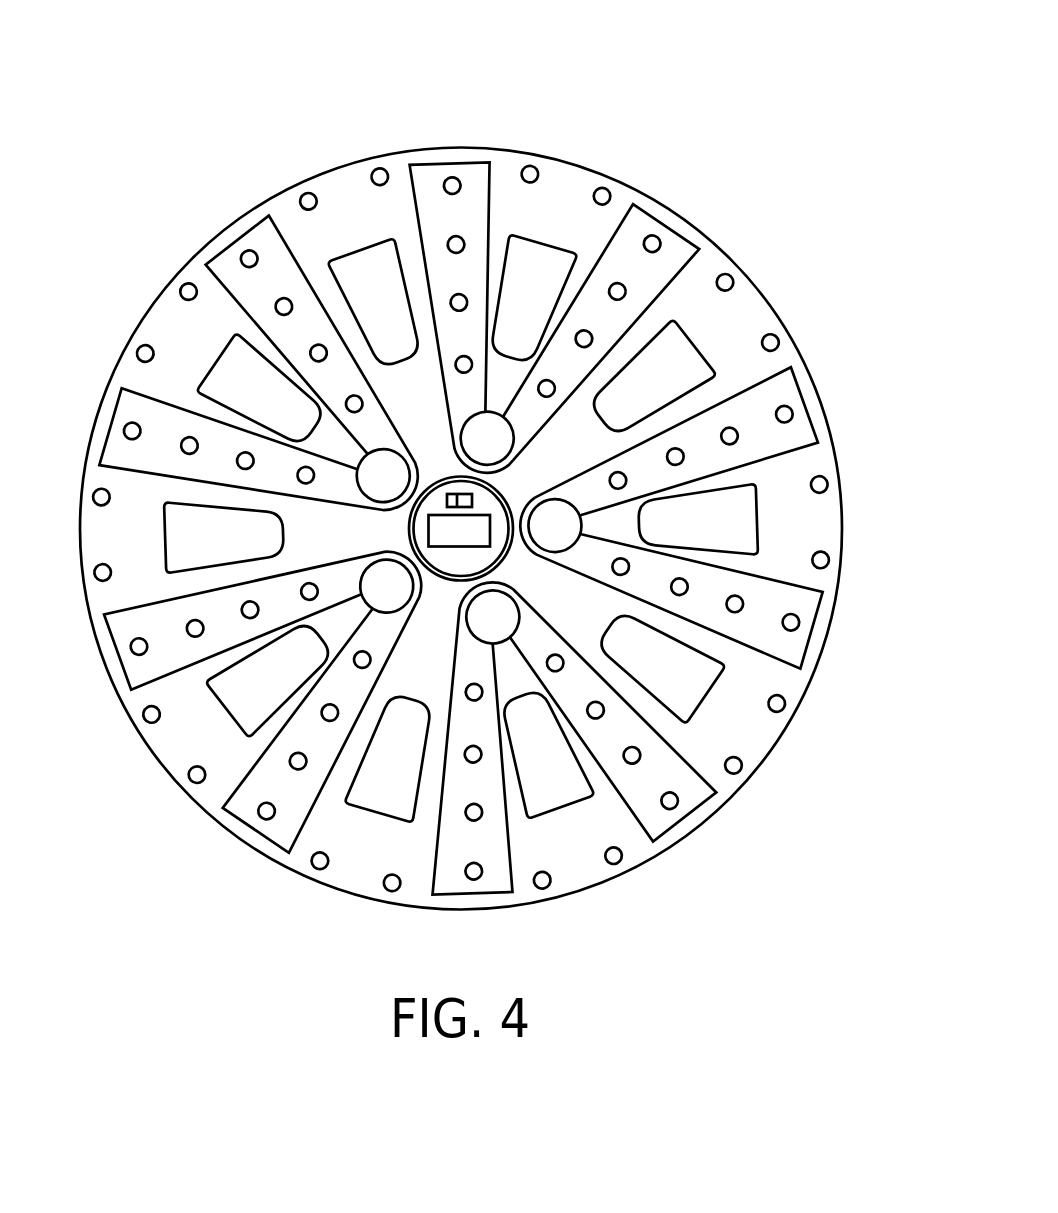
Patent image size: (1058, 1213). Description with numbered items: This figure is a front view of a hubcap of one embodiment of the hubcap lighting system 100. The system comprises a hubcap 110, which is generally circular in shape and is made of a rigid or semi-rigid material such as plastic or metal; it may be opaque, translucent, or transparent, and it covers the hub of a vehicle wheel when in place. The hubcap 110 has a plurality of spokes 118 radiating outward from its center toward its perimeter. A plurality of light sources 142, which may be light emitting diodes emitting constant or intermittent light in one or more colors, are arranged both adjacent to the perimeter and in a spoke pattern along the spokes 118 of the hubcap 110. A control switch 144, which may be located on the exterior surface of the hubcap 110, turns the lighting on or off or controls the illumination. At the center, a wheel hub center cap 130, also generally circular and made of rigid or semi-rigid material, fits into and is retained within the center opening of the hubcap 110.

The hubcap lighting system 100 is at (486, 484).
The hubcap 110 is at (577, 162).
The spokes 118 is at (455, 217).
The wheel hub center cap 130 is at (506, 487).
The light sources 142 is at (249, 253).
The control switch 144 is at (447, 501).